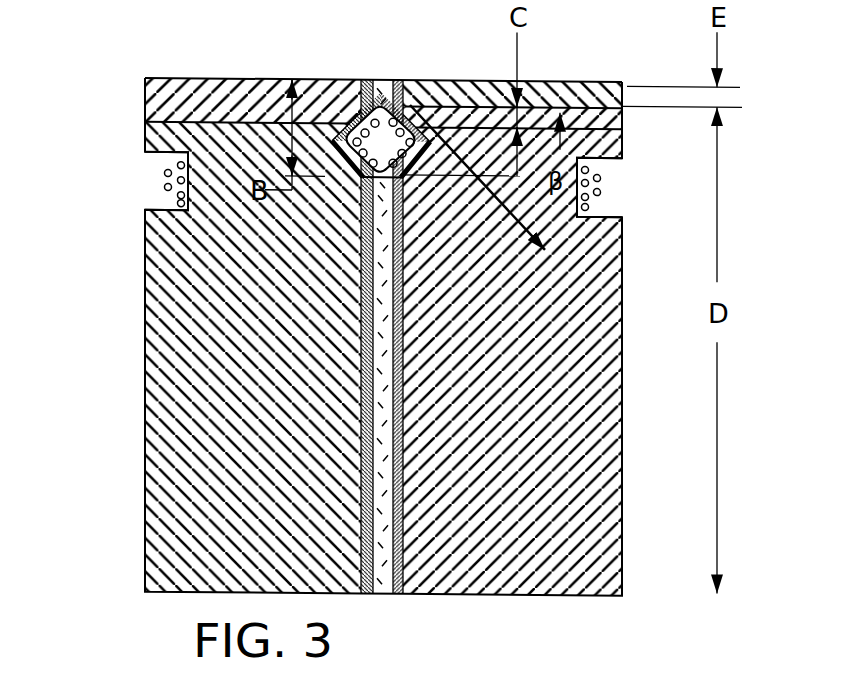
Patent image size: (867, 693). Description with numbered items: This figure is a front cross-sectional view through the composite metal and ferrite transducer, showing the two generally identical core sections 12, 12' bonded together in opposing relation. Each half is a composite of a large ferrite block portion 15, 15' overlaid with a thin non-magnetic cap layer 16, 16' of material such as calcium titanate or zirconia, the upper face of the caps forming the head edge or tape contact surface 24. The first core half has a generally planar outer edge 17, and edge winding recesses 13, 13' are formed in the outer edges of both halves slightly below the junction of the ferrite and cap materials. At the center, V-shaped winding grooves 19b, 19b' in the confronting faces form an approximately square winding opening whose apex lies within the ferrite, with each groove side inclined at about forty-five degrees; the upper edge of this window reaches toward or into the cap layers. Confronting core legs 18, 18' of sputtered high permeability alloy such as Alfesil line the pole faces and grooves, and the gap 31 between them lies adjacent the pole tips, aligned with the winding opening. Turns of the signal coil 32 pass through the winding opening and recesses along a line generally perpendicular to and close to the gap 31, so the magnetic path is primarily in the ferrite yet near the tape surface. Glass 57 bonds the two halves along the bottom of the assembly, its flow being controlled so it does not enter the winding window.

The first composite core section 12 is at (203, 336).
The second composite core section 12' is at (550, 338).
The edge winding recess 13 is at (130, 180).
The edge winding recess 13' is at (632, 188).
The ferrite block portion 15 is at (254, 358).
The ferrite block portion 15' is at (511, 361).
The non-magnetic cap layer 16 is at (253, 101).
The non-magnetic cap layer 16' is at (543, 77).
The outer edge 17 is at (145, 305).
The core leg 18 is at (347, 302).
The core leg 18' is at (426, 310).
The V-shaped winding groove 19b is at (353, 104).
The V-shaped winding groove 19b' is at (512, 88).
The head edge surface 24 is at (227, 79).
The gap 31 is at (378, 80).
The signal coil 32 is at (602, 178).
The glass 57 is at (382, 595).